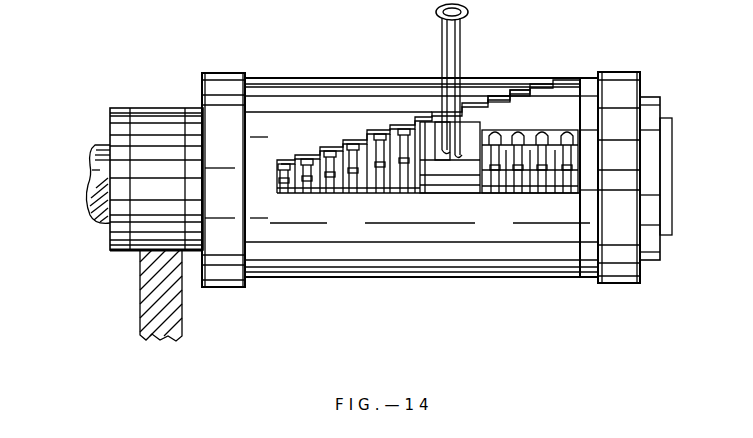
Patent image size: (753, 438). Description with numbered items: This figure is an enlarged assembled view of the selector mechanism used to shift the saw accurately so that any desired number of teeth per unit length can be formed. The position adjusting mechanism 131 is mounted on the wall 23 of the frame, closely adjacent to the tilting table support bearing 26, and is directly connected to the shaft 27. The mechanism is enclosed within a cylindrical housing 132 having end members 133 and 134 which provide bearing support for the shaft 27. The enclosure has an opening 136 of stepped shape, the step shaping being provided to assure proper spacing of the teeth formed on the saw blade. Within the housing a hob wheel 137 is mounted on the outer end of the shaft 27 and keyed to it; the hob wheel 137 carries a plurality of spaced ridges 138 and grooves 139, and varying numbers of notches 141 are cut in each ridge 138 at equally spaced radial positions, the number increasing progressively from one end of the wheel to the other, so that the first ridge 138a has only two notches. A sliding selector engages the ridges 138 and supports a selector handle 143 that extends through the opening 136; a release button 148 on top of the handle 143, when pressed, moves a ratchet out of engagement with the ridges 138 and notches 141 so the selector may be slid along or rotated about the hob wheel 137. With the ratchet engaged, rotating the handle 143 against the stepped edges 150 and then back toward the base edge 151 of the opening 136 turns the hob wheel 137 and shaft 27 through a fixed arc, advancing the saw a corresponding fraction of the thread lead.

The wall 23 is at (193, 295).
The tilting table support bearing 26 is at (115, 238).
The shaft 27 is at (95, 150).
The position adjusting mechanism 131 is at (337, 64).
The cylindrical housing 132 is at (478, 270).
The end member 133 is at (245, 285).
The end member 134 is at (635, 275).
The opening 136 is at (572, 82).
The hob wheel 137 is at (505, 133).
The ridges 138 is at (282, 190).
The first ridge 138a is at (568, 150).
The grooves 139 is at (368, 184).
The notches 141 is at (522, 182).
The selector handle 143 is at (455, 62).
The release button 148 is at (468, 12).
The stepped edges 150 is at (520, 92).
The base edge 151 is at (488, 200).